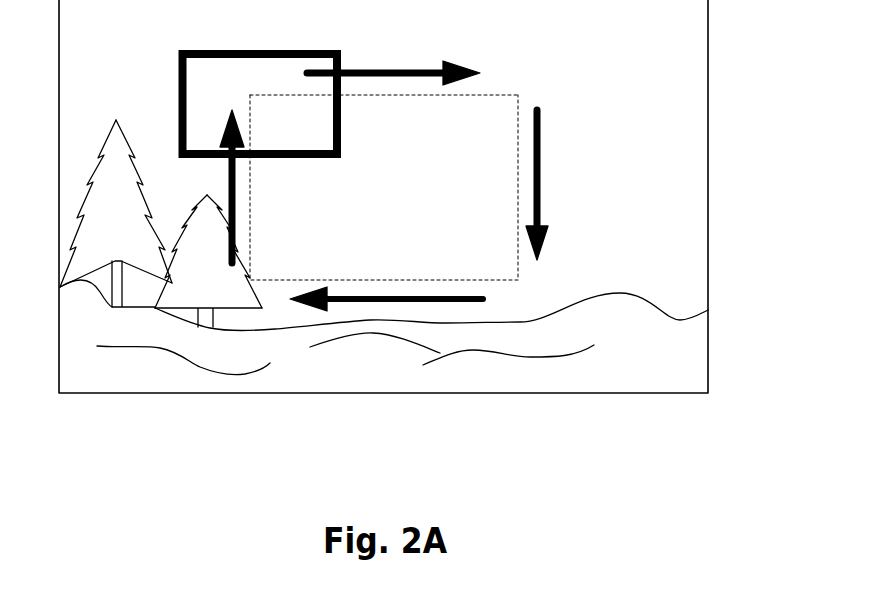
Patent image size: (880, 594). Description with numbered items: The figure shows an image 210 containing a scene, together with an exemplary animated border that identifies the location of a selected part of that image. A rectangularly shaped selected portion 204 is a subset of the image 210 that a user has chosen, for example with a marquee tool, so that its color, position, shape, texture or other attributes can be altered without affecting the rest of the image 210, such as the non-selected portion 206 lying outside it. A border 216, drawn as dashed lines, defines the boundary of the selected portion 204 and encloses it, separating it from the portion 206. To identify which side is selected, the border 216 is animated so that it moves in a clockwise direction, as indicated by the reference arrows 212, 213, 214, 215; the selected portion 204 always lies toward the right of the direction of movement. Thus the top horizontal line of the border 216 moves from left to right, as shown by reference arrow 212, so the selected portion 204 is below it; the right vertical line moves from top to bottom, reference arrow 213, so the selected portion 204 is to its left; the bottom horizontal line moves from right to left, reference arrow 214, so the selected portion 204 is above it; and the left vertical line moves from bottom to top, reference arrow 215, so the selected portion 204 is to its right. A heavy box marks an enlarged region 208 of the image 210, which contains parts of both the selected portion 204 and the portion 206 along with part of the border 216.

The selected portion 204 is at (405, 197).
The portion 206 is at (645, 180).
The enlarged region 208 is at (262, 51).
The image 210 is at (712, 102).
The reference arrow 212 is at (367, 70).
The reference arrow 213 is at (542, 140).
The reference arrow 214 is at (484, 299).
The reference arrow 215 is at (228, 180).
The border 216 is at (498, 92).